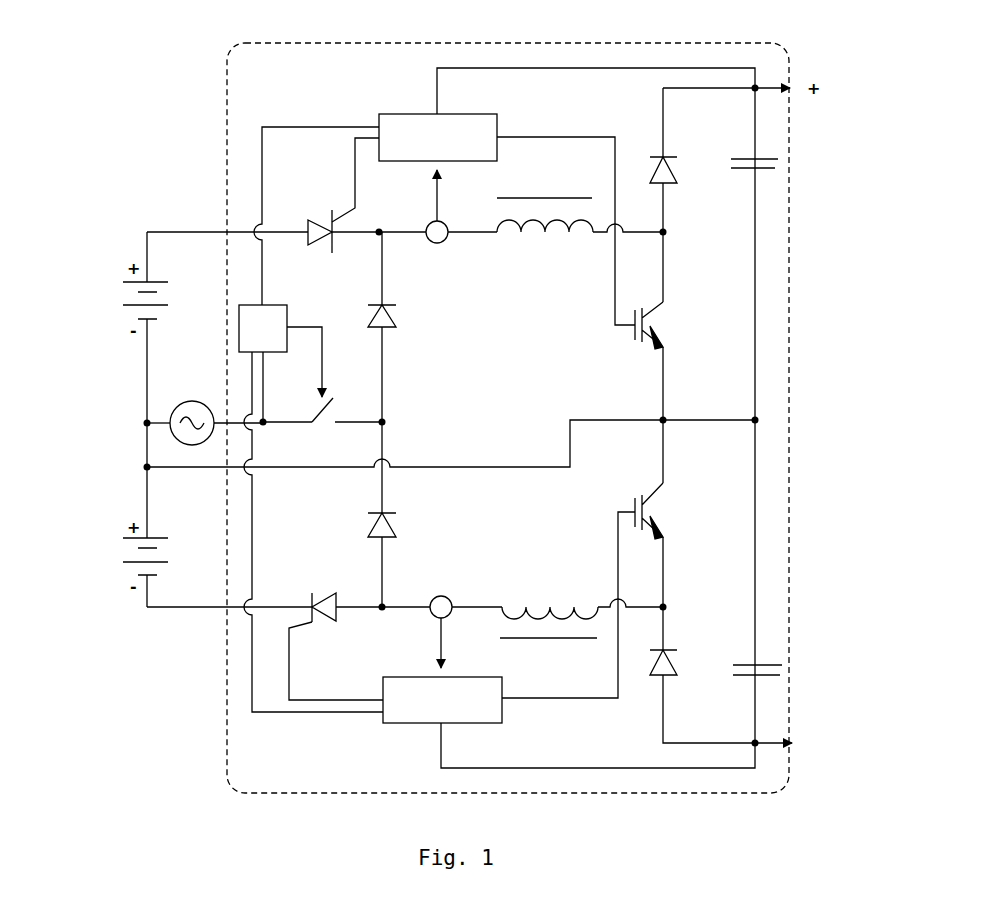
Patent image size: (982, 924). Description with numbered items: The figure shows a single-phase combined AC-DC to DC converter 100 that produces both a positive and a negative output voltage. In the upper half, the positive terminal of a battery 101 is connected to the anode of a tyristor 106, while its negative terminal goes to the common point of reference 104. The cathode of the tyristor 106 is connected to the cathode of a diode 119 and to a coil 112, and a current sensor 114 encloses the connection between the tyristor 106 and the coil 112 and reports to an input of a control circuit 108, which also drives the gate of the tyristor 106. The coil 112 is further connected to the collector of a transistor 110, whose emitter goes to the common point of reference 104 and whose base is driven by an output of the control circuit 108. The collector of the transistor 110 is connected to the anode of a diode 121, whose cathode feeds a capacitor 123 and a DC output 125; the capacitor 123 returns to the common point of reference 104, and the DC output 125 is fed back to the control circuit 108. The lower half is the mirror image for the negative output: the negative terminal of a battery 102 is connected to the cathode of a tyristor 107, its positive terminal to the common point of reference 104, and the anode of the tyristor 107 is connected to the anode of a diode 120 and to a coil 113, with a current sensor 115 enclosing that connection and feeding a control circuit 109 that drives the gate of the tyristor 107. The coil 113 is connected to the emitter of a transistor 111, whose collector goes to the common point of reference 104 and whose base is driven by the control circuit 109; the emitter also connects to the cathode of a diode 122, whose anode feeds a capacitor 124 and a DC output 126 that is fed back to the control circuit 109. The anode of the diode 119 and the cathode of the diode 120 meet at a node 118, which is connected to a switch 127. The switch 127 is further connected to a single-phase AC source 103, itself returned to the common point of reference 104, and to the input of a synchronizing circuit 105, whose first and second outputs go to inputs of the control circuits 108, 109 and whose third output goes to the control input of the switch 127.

The single-phase combined AC-DC to DC converter 100 is at (355, 43).
The battery 101 is at (122, 283).
The battery 102 is at (122, 540).
The single-phase AC source 103 is at (190, 401).
The common point of reference 104 is at (147, 421).
The synchronizing circuit 105 is at (272, 305).
The tyristor 106 is at (308, 221).
The tyristor 107 is at (312, 594).
The control circuit 108 is at (428, 114).
The control circuit 109 is at (430, 725).
The transistor 110 is at (656, 332).
The transistor 111 is at (656, 520).
The coil 112 is at (545, 236).
The coil 113 is at (548, 608).
The current sensor 114 is at (434, 244).
The current sensor 115 is at (439, 596).
The node 118 is at (383, 421).
The diode 119 is at (392, 320).
The diode 120 is at (394, 526).
The diode 121 is at (669, 161).
The diode 122 is at (673, 653).
The capacitor 123 is at (775, 168).
The capacitor 124 is at (780, 665).
The DC output 125 is at (800, 86).
The DC output 126 is at (798, 746).
The switch 127 is at (317, 409).